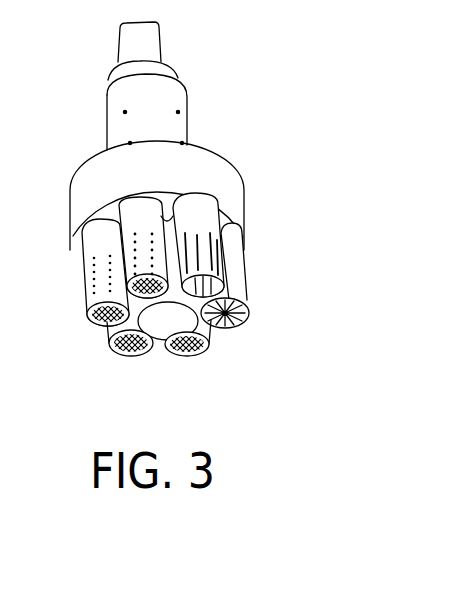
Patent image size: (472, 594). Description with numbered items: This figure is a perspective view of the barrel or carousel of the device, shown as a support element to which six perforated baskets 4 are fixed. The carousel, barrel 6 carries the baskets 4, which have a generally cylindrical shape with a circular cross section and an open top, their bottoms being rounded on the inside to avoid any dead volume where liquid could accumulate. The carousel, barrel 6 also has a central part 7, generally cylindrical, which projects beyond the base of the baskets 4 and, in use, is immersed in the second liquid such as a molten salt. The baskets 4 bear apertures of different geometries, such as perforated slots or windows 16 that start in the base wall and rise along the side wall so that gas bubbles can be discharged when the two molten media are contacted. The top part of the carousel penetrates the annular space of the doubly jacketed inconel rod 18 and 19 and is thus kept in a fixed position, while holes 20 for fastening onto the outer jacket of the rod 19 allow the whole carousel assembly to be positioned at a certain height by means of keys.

The inconel rod 18 is at (145, 33).
The outer jacket of the rod 19 is at (125, 123).
The holes 20 is at (183, 110).
The carousel, barrel 6 is at (225, 183).
The perforated baskets 4 is at (85, 300).
The windows 16 is at (245, 297).
The central part 7 is at (163, 330).